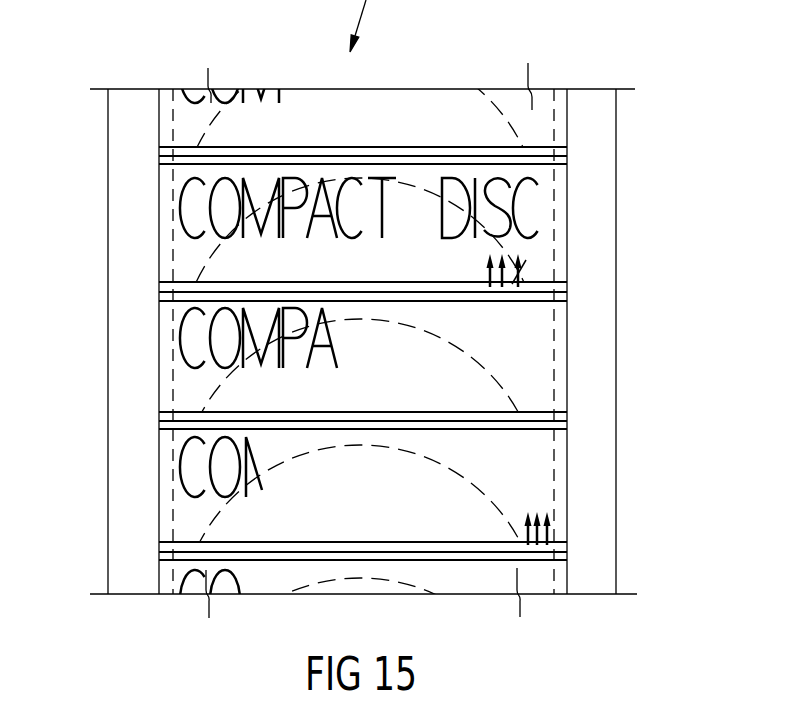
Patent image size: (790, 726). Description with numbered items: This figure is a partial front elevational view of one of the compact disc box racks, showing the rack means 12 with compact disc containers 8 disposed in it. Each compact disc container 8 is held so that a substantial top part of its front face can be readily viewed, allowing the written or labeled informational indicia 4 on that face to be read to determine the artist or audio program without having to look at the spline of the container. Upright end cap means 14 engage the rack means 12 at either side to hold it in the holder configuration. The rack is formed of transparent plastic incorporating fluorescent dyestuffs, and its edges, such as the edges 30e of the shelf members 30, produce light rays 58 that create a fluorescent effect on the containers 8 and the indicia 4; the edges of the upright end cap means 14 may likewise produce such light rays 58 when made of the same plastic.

The rack means 12 is at (380, 26).
The upright end cap means 14 is at (129, 101).
The informational indicia 4 is at (180, 194).
The compact disc container 8 is at (540, 173).
The shelf 30 is at (190, 157).
The edge 30e is at (414, 150).
The light rays 58 is at (522, 266).